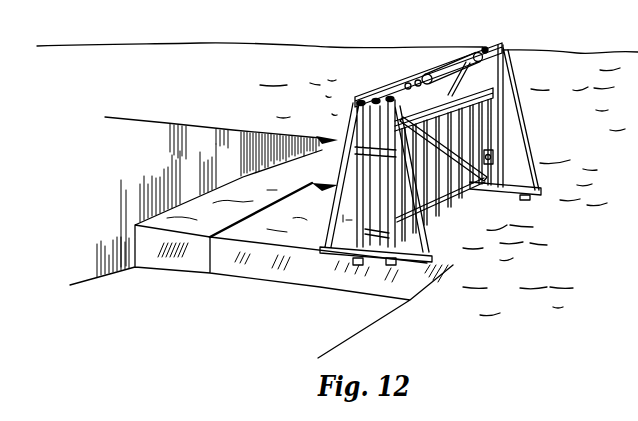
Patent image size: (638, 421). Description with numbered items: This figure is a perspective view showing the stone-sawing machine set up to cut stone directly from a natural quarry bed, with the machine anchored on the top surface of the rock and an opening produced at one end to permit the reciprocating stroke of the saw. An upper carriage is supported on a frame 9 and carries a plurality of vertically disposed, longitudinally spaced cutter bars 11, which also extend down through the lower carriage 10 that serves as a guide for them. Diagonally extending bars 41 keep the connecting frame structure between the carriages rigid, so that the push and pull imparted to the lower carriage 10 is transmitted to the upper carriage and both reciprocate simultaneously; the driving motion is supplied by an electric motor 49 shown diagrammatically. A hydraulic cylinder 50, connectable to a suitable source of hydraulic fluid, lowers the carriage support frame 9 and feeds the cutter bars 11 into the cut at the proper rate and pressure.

The hydraulic cylinder 50 is at (454, 58).
The frame 9 is at (423, 120).
The electric motor 49 is at (493, 156).
The diagonally extending bars 41 is at (471, 191).
The lower carriage 10 is at (454, 193).
The cutter bars 11 is at (423, 210).